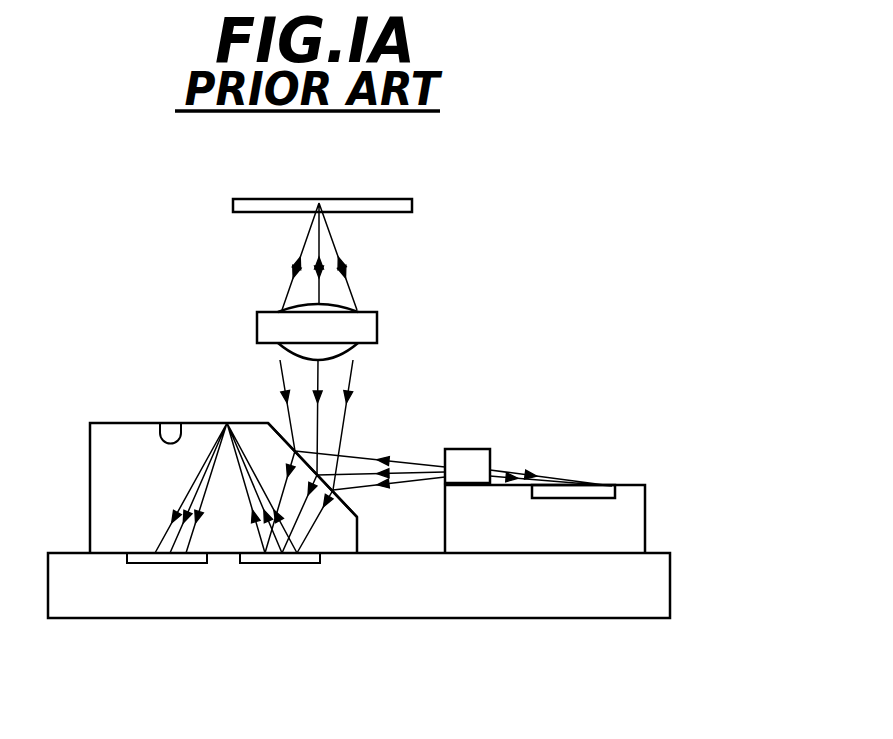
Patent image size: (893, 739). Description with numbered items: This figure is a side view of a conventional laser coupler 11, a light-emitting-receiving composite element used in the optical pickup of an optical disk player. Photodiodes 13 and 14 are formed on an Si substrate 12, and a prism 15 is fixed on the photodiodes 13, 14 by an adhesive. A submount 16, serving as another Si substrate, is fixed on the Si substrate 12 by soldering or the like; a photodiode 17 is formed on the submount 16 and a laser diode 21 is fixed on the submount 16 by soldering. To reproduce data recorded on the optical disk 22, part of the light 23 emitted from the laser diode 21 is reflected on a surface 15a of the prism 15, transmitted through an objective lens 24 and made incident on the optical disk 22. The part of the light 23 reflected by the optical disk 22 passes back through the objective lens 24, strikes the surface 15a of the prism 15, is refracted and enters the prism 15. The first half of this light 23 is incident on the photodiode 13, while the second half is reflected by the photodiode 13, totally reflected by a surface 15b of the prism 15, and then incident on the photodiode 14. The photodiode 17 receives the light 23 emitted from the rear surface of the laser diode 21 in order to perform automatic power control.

The laser coupler 11 is at (172, 285).
The Si substrate 12 is at (670, 585).
The photodiode 13 is at (275, 568).
The photodiode 14 is at (158, 568).
The prism 15 is at (125, 438).
The surface of the prism 15a is at (352, 503).
The surface of the prism 15b is at (176, 423).
The submount 16 is at (645, 522).
The photodiode 17 is at (595, 492).
The laser diode 21 is at (468, 457).
The optical disk 22 is at (375, 199).
The light 23 is at (352, 455).
The objective lens 24 is at (363, 328).